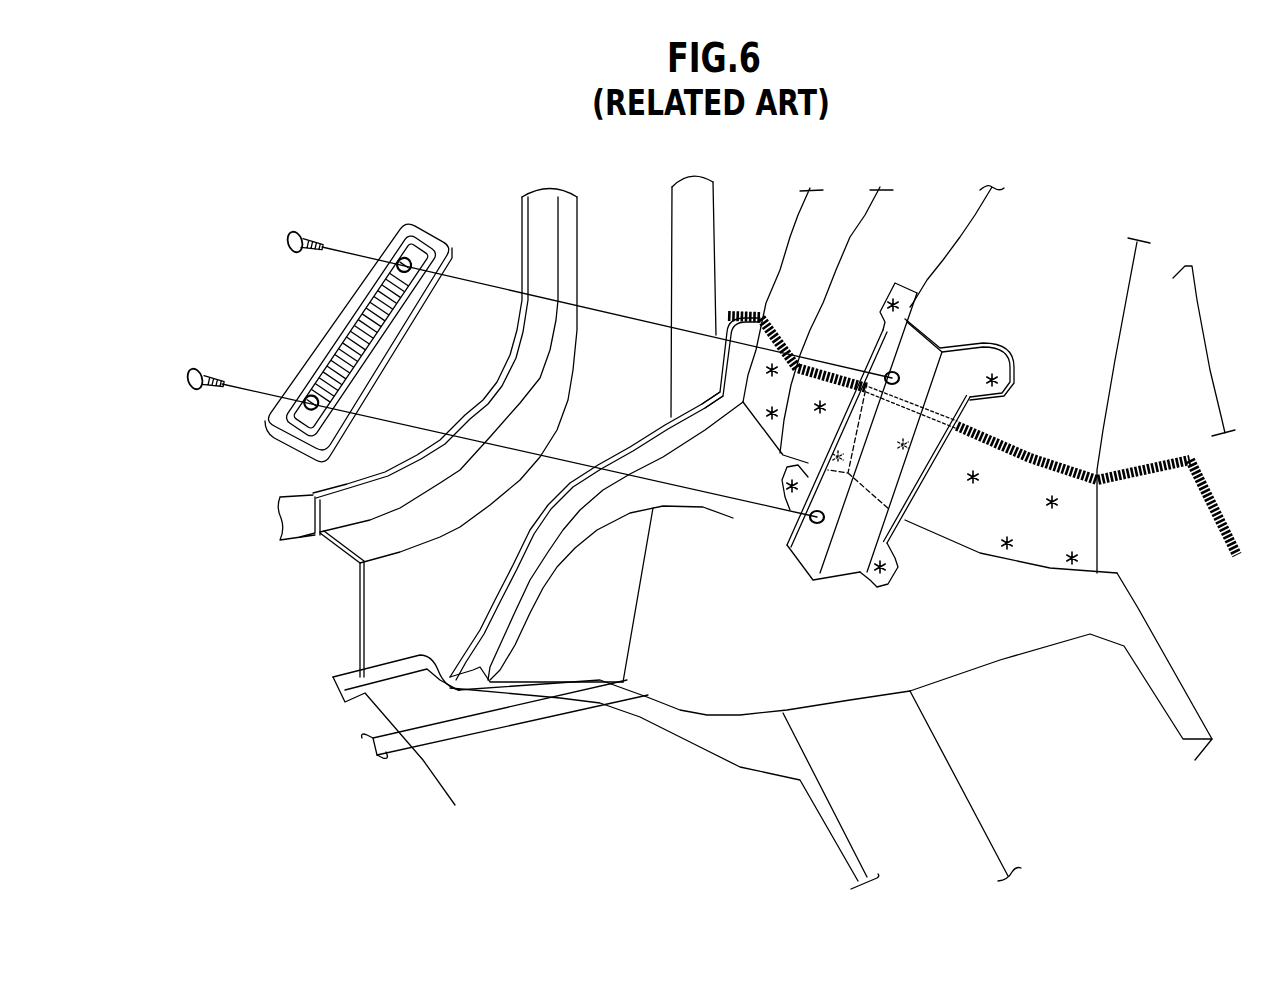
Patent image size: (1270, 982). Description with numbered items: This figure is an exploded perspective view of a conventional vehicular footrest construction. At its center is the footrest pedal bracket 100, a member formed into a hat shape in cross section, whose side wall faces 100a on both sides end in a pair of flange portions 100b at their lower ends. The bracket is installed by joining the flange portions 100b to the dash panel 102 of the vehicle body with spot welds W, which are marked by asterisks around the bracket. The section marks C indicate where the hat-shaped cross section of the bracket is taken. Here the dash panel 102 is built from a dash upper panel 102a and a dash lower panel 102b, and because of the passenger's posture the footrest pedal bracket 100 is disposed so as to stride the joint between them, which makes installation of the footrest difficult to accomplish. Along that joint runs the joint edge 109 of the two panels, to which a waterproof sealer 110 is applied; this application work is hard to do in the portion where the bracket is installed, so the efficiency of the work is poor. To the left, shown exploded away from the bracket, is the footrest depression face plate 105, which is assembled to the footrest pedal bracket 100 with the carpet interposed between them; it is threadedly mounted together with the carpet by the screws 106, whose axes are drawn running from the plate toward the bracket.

The footrest pedal bracket 100 is at (917, 350).
The side wall faces 100a is at (792, 528).
The flange portions 100b is at (783, 488).
The dash panel 102 is at (1078, 277).
The dash upper panel 102a is at (800, 258).
The dash lower panel 102b is at (753, 377).
The footrest depression face plate 105 is at (352, 291).
The screws 106 is at (297, 230).
The joint edge 109 is at (1234, 552).
The waterproof sealer 110 is at (1060, 452).
The spot welds W is at (1000, 368).
The section line C- C is at (870, 322).